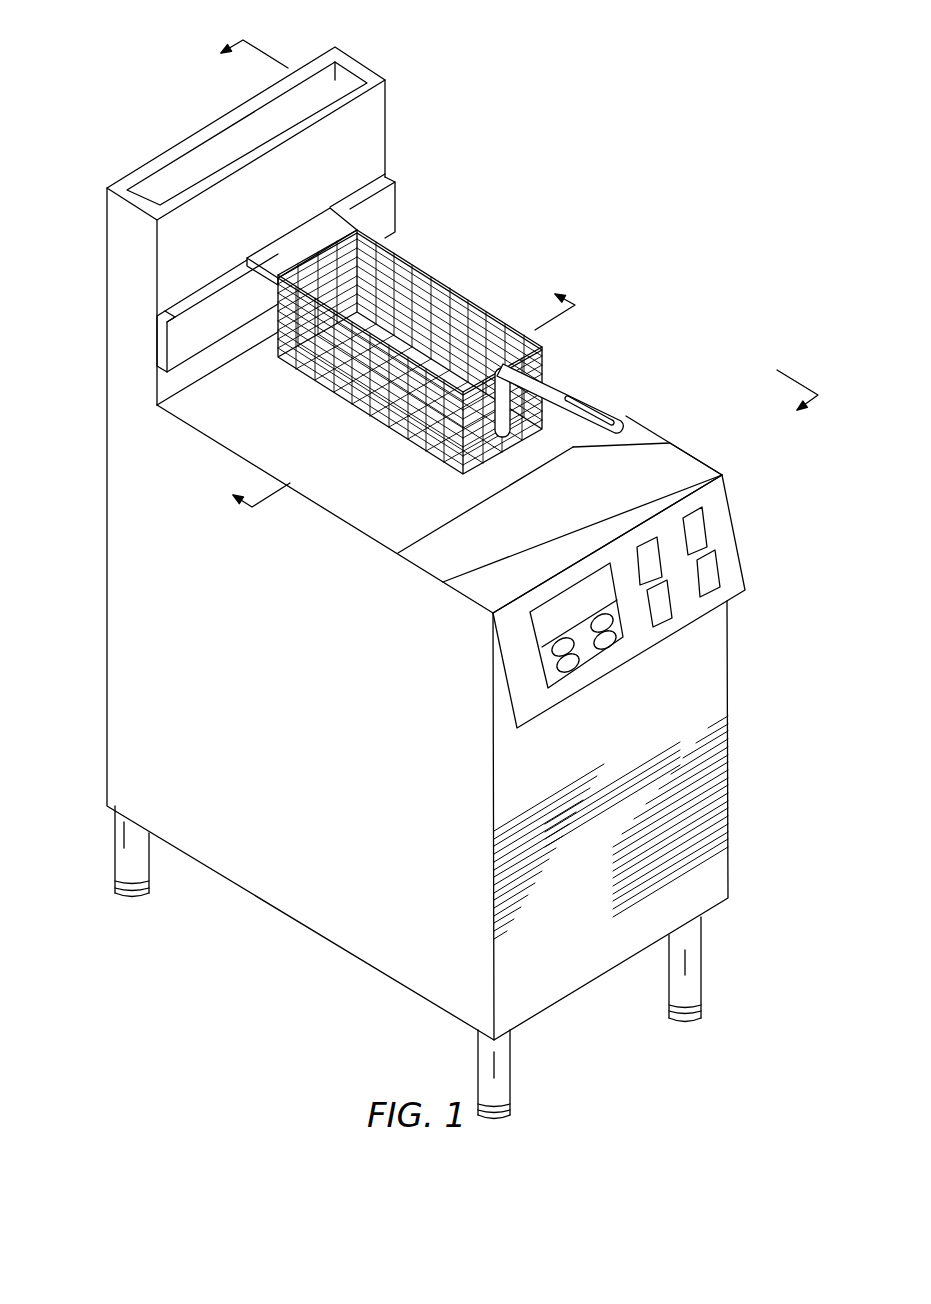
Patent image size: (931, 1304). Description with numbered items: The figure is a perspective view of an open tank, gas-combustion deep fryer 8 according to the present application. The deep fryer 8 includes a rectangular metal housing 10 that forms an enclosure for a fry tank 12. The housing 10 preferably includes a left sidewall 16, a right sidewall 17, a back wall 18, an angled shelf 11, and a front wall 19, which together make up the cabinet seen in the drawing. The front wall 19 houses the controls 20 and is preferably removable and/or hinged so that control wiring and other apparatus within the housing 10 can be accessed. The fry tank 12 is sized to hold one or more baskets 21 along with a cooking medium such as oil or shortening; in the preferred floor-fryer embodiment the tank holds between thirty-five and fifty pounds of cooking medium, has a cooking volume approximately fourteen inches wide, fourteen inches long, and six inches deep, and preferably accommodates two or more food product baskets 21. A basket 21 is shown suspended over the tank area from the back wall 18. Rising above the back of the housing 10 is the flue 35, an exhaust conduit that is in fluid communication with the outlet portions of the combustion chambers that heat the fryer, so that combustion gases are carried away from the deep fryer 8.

The housing 10 is at (119, 183).
The flue 35 is at (363, 149).
The left sidewall 16 is at (311, 886).
The back wall 18 is at (105, 586).
The fry tank 12 is at (309, 454).
The angled shelf 11 is at (610, 460).
The right sidewall 17 is at (730, 596).
The controls 20 is at (623, 640).
The front wall 19 is at (702, 715).
The basket 21 is at (447, 283).
The deep fryer 8 is at (598, 346).